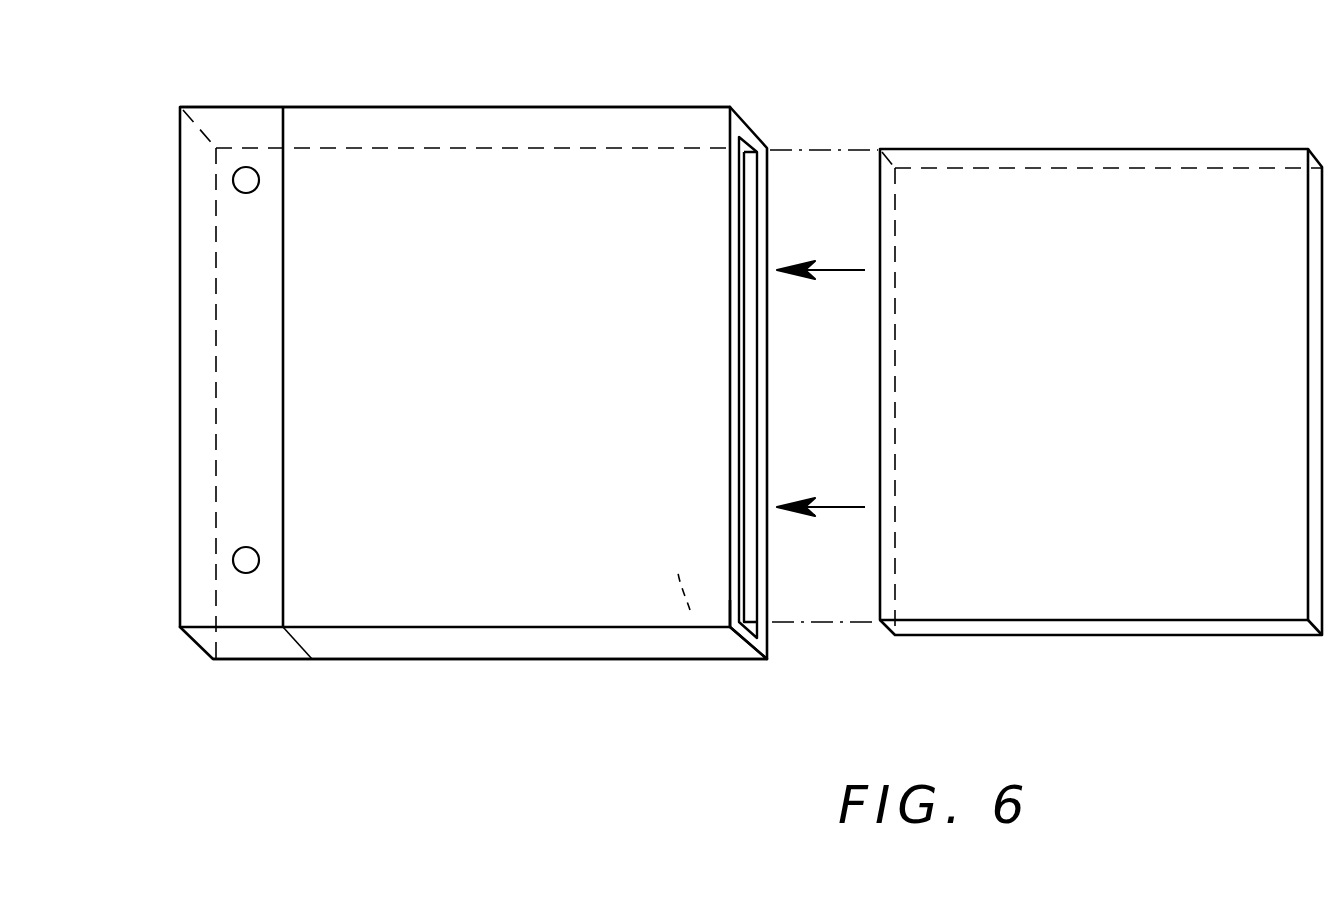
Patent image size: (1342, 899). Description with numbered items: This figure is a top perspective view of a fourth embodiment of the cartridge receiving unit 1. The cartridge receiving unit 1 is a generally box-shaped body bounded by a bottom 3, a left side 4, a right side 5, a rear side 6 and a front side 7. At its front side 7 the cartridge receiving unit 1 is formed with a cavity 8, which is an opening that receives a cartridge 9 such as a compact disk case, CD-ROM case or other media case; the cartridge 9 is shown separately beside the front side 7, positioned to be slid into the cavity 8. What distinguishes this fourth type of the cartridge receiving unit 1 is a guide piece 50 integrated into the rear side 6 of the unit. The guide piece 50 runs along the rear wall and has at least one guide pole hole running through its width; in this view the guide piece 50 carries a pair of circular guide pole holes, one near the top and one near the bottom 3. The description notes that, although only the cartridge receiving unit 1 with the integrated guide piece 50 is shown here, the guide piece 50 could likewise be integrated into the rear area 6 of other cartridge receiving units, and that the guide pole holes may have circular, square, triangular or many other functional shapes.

The cartridge receiving unit 1 is at (610, 590).
The bottom 3 is at (690, 610).
The left side 4 is at (463, 651).
The right side 5 is at (500, 108).
The rear side 6 is at (281, 655).
The front side 7 is at (747, 152).
The cavity 8 is at (748, 186).
The cartridge 9 is at (1165, 183).
The guide piece 50 is at (243, 472).